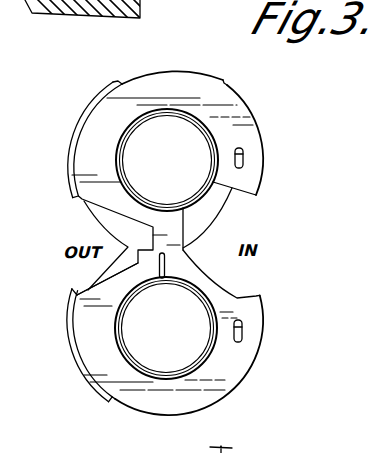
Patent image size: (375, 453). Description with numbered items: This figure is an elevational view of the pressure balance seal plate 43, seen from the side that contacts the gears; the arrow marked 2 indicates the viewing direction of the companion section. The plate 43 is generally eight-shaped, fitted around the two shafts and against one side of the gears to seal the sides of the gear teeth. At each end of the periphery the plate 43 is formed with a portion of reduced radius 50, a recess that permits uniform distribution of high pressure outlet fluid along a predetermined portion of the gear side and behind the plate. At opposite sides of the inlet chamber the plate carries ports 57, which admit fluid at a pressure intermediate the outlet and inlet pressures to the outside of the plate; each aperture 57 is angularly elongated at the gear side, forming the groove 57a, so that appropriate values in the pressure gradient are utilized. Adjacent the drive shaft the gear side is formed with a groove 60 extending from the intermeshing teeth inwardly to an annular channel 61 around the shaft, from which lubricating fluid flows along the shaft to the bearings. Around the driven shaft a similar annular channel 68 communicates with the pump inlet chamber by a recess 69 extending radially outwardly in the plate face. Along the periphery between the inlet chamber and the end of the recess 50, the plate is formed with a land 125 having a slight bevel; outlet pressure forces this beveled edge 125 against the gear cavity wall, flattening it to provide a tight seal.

The section line of FIG. 2 is at (10, 82).
The pressure balanced seal plate 43 is at (60, 342).
The portion of reduced radius 50 is at (172, 71).
The port 57 is at (244, 163).
The groove 57a is at (333, 131).
The groove 60 is at (166, 263).
The annular channel 61 is at (117, 330).
The annular channel 68 is at (119, 143).
The recess 69 is at (220, 203).
The land 125 is at (248, 96).